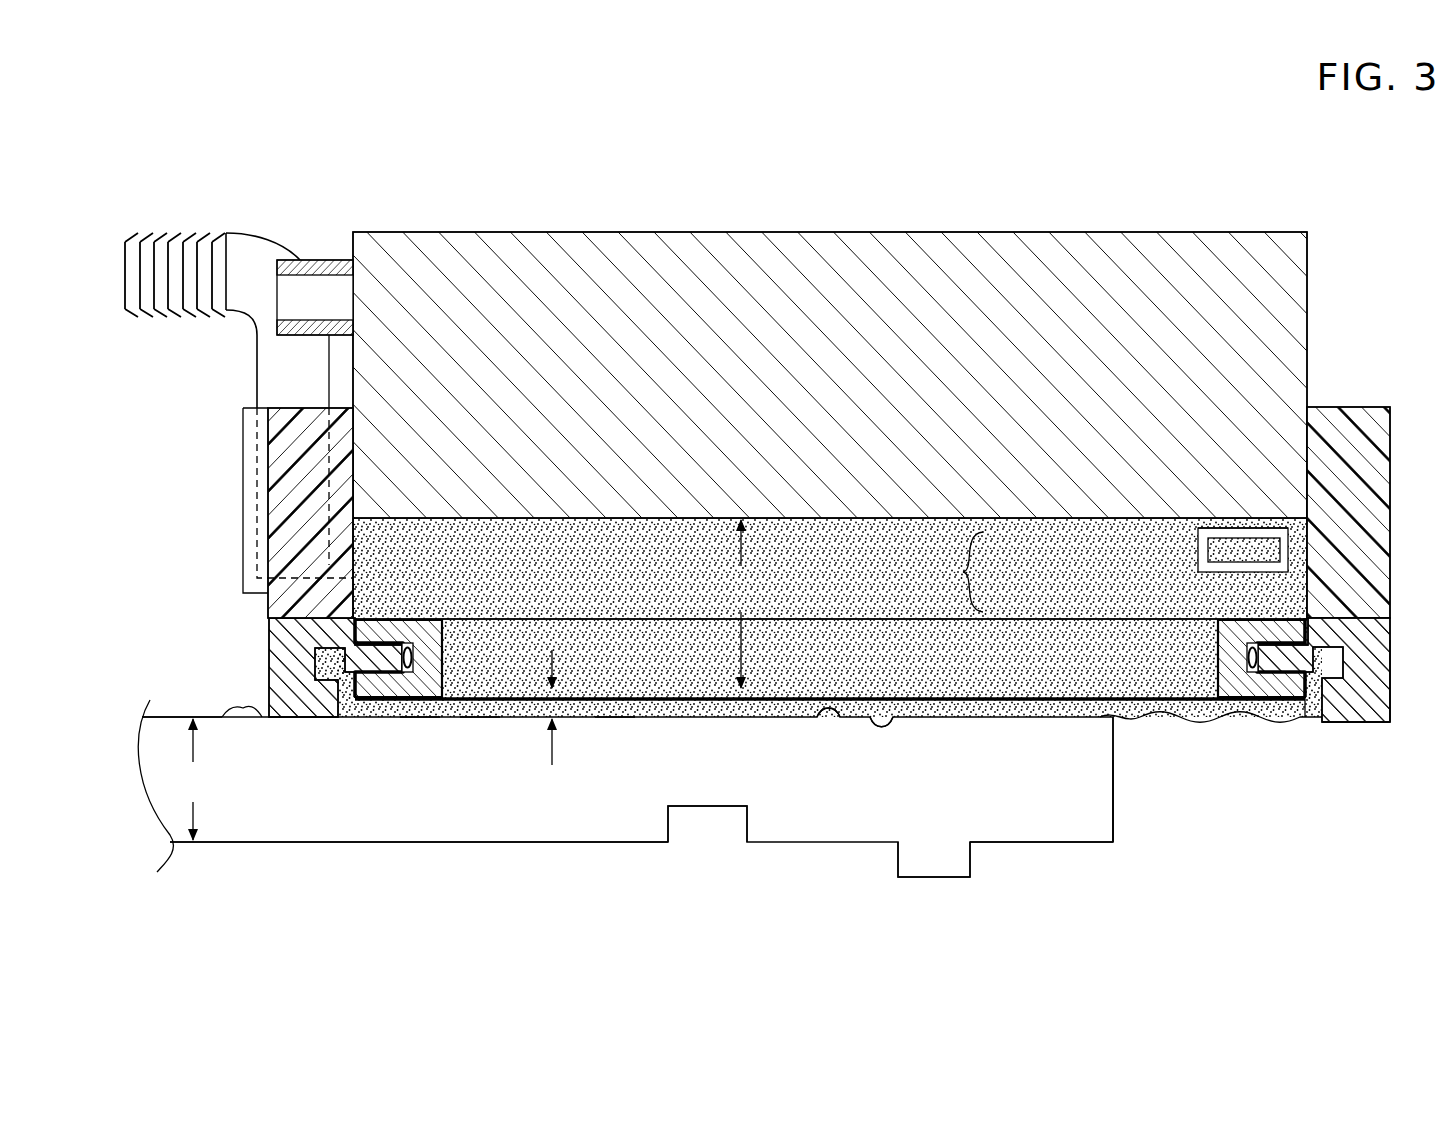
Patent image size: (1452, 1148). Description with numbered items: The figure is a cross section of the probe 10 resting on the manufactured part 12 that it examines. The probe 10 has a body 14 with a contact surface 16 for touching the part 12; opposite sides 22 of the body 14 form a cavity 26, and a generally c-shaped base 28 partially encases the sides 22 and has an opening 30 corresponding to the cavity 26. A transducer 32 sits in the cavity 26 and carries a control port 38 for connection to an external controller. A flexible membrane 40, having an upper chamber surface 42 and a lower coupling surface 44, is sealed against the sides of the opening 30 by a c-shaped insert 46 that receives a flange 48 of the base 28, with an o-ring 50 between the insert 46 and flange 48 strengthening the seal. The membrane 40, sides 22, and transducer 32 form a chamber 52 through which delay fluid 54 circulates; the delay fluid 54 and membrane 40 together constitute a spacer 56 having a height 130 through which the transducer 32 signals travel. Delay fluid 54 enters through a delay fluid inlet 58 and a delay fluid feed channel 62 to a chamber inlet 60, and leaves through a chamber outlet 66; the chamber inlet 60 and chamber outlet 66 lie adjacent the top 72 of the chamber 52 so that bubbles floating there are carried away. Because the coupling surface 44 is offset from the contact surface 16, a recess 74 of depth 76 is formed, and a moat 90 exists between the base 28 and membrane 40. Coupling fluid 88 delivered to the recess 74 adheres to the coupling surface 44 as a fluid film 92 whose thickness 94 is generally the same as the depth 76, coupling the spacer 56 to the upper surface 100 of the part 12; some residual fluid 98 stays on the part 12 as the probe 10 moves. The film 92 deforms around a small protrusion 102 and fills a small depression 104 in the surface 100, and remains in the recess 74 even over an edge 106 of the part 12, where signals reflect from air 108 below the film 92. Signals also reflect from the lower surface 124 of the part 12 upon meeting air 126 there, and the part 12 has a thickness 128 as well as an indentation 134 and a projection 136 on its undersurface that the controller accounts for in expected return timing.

The probe 10 is at (1350, 166).
The part 12 is at (365, 843).
The body 14 is at (1414, 415).
The contact surface 16 is at (1360, 735).
The sides 22 is at (1391, 568).
The cavity 26 is at (1305, 432).
The base 28 is at (1390, 683).
The opening 30 is at (360, 612).
The transducer 32 is at (1307, 287).
The control port 38 is at (327, 260).
The flexible membrane 40 is at (975, 711).
The chamber surface 42 is at (1088, 693).
The coupling surface 44 is at (971, 710).
The insert 46 is at (1218, 625).
The flange 48 is at (1235, 680).
The o-ring 50 is at (442, 665).
The chamber 52 is at (355, 590).
The delay fluid 54 is at (985, 571).
The spacer 56 is at (949, 572).
The delay fluid inlet 58 is at (257, 382).
The chamber inlet 60 is at (355, 538).
The delay fluid feed channel 62 is at (243, 497).
The chamber outlet 66 is at (1198, 530).
The top of the chamber 72 is at (1286, 528).
The recess 74 is at (428, 709).
The recess depth 76 is at (293, 650).
The coupling fluid 88 is at (488, 709).
The moat 90 is at (1308, 712).
The fluid film 92 is at (613, 718).
The film thickness 94 is at (552, 765).
The residual fluid 98 is at (243, 706).
The upper surface 100 is at (173, 710).
The protrusion 102 is at (827, 712).
The depression 104 is at (890, 723).
The edge 106 is at (1113, 811).
The air 108 is at (1218, 797).
The lower surface 124 is at (1082, 855).
The air 126 is at (653, 925).
The thickness 128 is at (196, 779).
The spacer height 130 is at (743, 604).
The indentation 134 is at (747, 830).
The projection 136 is at (970, 867).